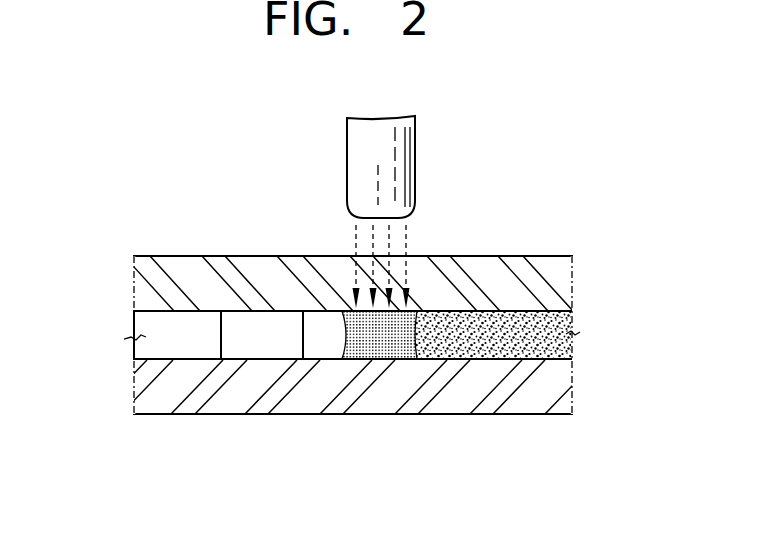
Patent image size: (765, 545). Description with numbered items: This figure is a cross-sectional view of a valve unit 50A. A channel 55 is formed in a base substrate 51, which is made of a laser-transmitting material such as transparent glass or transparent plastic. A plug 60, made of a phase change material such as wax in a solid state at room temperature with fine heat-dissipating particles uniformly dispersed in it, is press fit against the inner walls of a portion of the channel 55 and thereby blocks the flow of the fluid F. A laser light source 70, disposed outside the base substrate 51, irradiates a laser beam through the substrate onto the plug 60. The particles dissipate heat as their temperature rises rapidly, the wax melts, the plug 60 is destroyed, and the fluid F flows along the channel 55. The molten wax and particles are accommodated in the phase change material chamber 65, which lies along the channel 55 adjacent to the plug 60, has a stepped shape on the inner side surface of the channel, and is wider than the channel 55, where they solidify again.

The valve unit 50A is at (127, 195).
The base substrate 51 is at (512, 421).
The channel 55 is at (182, 347).
The phase change material chamber 65 is at (265, 345).
The plug 60 is at (377, 359).
The fluid F is at (573, 317).
The laser light source 70 is at (355, 158).